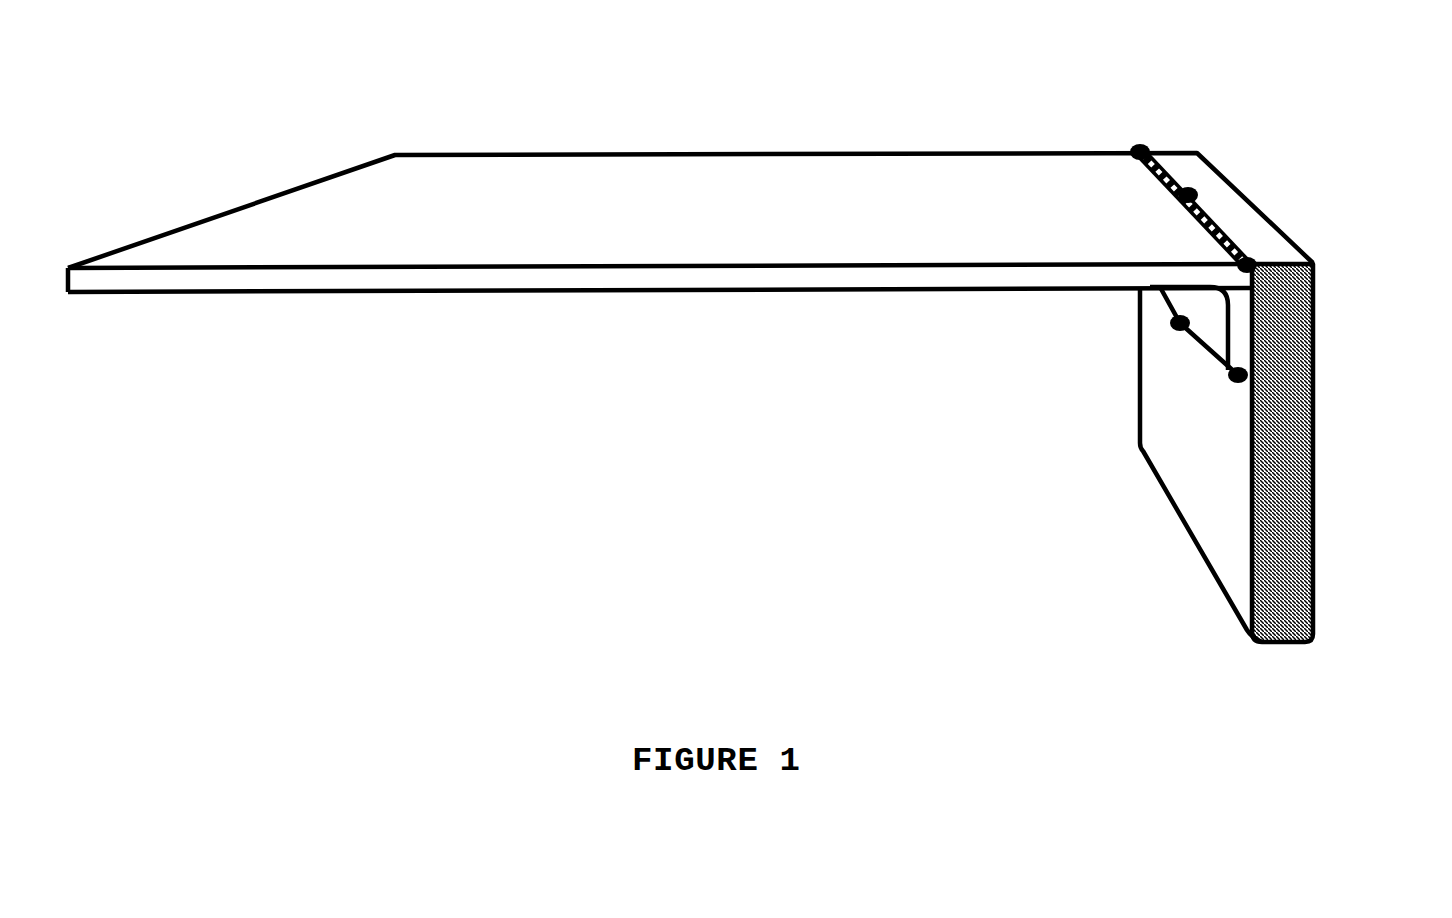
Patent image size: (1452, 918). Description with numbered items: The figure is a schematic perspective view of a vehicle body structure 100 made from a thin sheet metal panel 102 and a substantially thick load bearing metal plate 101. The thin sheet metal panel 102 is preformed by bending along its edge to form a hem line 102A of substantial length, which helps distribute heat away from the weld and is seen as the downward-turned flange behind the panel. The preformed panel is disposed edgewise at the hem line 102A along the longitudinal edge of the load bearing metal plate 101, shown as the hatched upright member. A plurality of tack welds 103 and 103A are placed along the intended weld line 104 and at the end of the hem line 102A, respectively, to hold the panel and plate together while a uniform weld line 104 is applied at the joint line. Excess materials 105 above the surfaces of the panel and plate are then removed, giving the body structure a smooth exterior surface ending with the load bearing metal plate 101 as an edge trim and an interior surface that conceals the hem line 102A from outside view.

The vehicle body structure 100 is at (1143, 75).
The load bearing metal plate 101 is at (1287, 347).
The thin sheet metal panel 102 is at (635, 180).
The hem line 102A is at (1237, 303).
The tack welds 103 is at (1190, 192).
The tack welds 103A is at (1172, 322).
The weld line 104 is at (1217, 225).
The excess materials 105 is at (1138, 167).